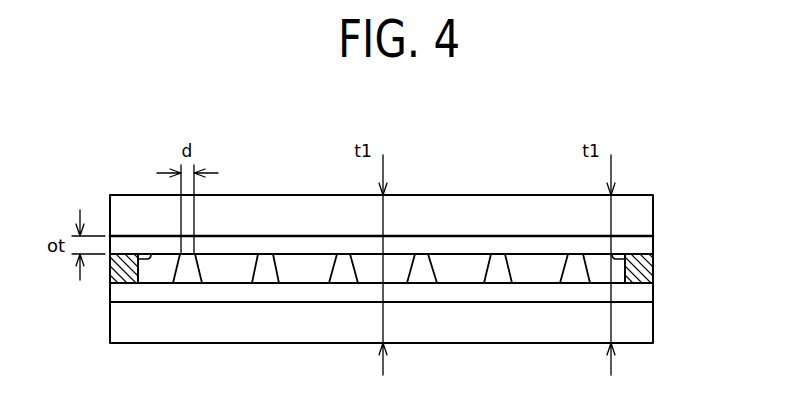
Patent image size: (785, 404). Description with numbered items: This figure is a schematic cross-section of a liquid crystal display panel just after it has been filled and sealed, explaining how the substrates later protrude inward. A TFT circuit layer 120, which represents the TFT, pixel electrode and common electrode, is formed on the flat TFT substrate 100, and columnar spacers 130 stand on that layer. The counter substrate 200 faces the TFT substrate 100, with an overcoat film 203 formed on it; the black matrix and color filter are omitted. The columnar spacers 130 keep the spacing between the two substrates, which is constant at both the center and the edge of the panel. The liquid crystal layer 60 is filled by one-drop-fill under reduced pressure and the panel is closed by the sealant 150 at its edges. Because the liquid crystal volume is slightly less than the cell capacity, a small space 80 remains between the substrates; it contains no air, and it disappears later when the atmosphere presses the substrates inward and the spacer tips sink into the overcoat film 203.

The counter substrate 200 is at (643, 218).
The overcoat film 203 is at (643, 245).
The sealant 150 is at (646, 270).
The TFT circuit layer 120 is at (643, 296).
The TFT substrate 100 is at (643, 325).
The columnar spacer 130 is at (497, 268).
The liquid crystal layer 60 is at (538, 268).
The space 80 is at (148, 258).